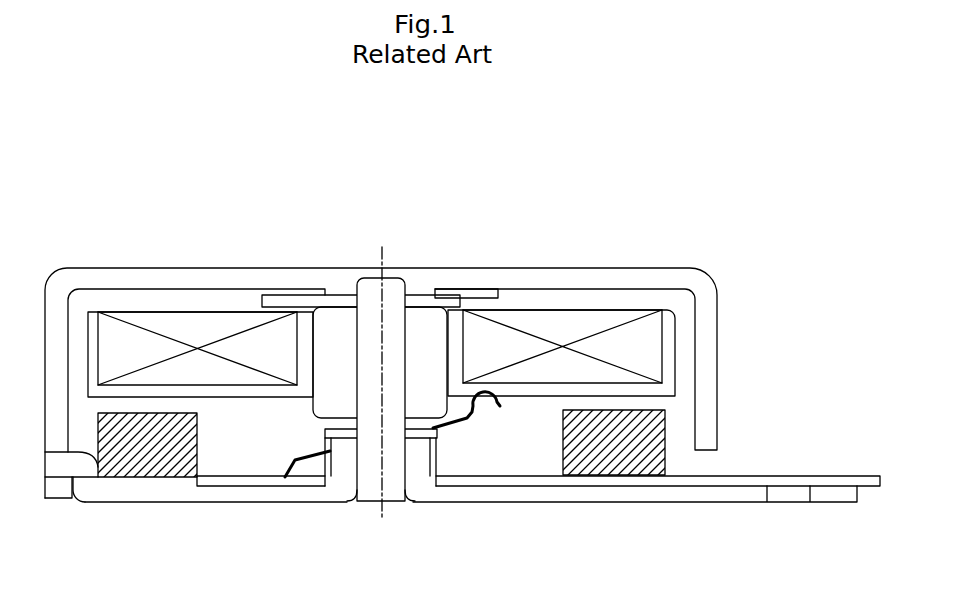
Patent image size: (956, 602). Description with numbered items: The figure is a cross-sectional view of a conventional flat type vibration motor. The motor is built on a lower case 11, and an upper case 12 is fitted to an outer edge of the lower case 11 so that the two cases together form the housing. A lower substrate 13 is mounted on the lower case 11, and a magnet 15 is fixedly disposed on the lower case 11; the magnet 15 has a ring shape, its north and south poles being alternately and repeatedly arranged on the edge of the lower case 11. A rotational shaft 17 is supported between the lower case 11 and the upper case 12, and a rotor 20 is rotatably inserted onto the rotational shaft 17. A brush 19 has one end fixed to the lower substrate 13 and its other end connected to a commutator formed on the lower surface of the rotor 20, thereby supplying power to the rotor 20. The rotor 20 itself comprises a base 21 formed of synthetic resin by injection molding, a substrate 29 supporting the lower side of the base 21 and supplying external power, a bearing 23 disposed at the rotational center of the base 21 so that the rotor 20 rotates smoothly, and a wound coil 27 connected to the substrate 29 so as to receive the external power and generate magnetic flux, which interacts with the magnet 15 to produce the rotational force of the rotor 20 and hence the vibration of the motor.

The lower case 11 is at (755, 495).
The upper case 12 is at (670, 275).
The lower substrate 13 is at (853, 480).
The magnet 15 is at (187, 470).
The rotational shaft 17 is at (372, 490).
The brush 19 is at (462, 432).
The rotor 20 is at (211, 302).
The base 21 is at (672, 342).
The bearing 23 is at (429, 318).
The wound coil 27 is at (137, 330).
The substrate 29 is at (277, 392).